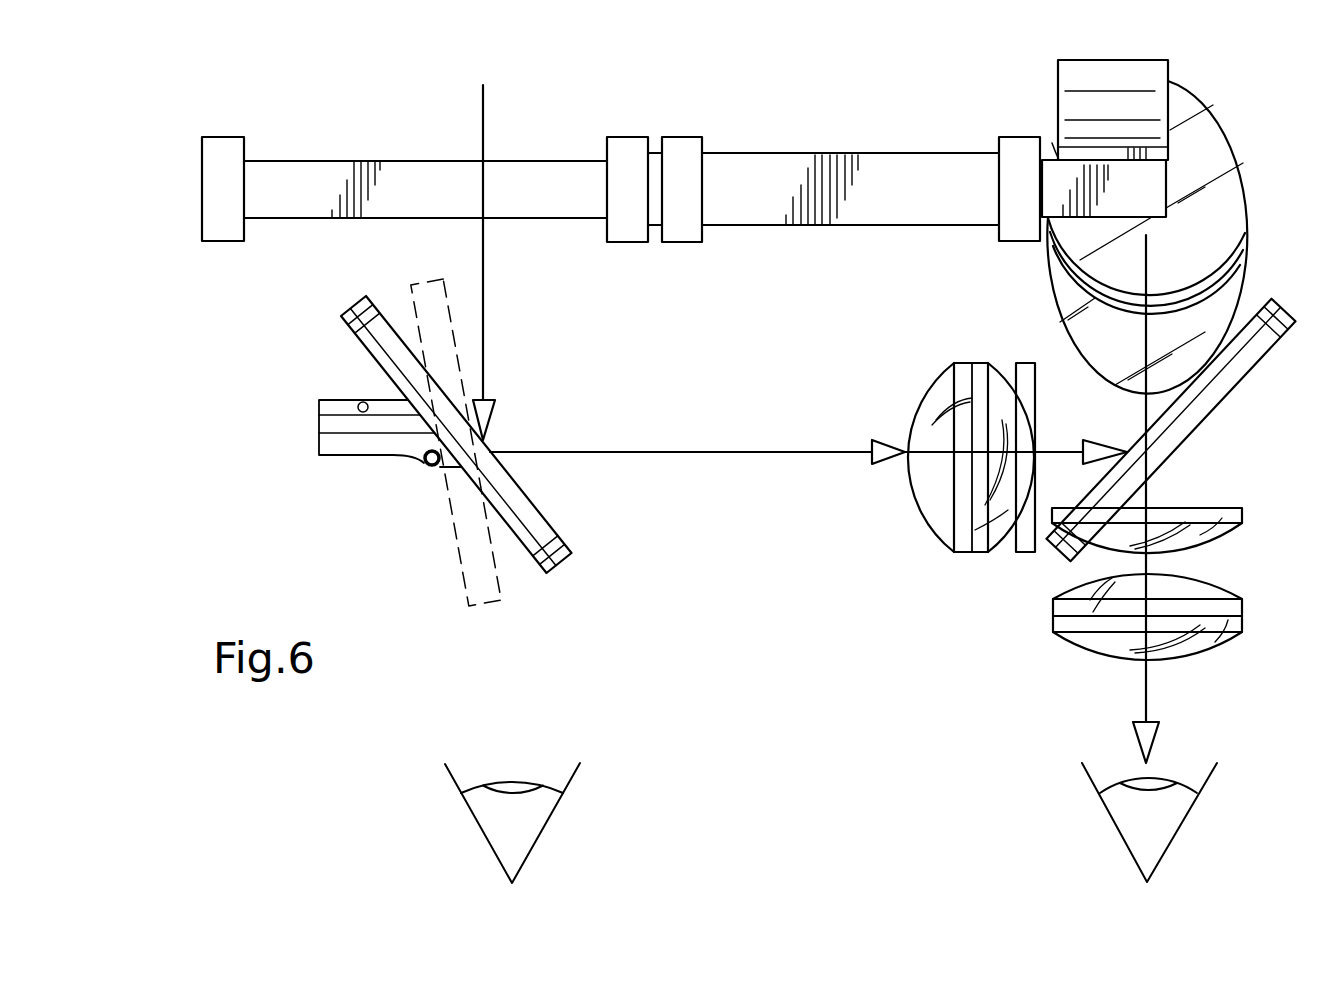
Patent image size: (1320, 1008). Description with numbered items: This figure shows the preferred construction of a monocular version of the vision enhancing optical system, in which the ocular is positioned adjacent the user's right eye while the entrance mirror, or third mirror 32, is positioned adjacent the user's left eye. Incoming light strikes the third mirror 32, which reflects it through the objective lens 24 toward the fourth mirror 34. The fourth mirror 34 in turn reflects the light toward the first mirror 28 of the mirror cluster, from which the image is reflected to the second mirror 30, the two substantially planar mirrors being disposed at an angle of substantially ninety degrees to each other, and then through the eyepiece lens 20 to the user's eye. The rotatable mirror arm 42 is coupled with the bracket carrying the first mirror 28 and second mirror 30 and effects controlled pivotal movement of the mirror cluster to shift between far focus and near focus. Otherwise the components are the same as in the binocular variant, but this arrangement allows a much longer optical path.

The rotatable mirror arm 42 is at (758, 170).
The first mirror 28 is at (1223, 137).
The second mirror 30 is at (1235, 283).
The fourth mirror 34 is at (1258, 352).
The third mirror 32 is at (542, 535).
The objective lens 24 is at (940, 492).
The eyepiece lens 20 is at (1225, 610).